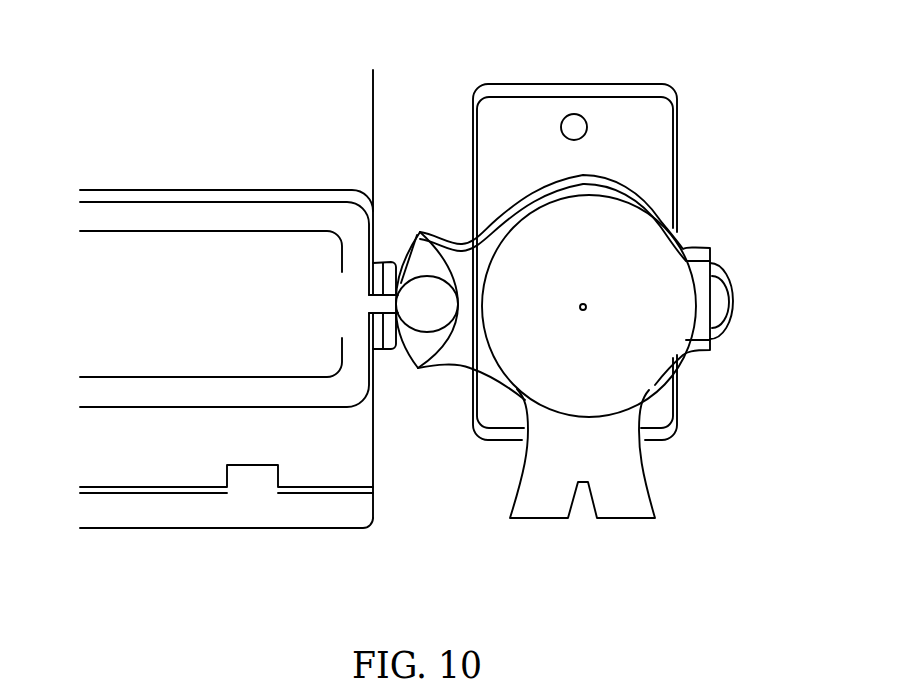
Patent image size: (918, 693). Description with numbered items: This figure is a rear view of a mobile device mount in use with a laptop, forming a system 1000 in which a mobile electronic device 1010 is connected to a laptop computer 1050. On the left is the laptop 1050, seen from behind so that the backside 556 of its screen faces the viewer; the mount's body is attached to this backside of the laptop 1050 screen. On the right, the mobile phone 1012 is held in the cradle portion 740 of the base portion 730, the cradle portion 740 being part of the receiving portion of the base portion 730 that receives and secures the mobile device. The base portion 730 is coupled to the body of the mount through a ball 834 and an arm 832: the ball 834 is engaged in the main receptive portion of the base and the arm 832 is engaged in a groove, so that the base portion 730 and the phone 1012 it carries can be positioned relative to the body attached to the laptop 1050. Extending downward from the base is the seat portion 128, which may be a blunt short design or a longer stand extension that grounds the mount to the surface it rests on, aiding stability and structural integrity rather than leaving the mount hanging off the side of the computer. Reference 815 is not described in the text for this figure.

The housing 815 is at (170, 186).
The backside of laptop screen 556 is at (368, 151).
The laptop computer 1050 is at (368, 450).
The arm 832 is at (369, 304).
The ball 834 is at (452, 304).
The system 1000 is at (723, 82).
The mobile electronic device 1010 is at (662, 138).
The mobile phone 1012 is at (542, 131).
The base portion 730 is at (723, 387).
The cradle portion 740 is at (553, 185).
The seat portion 128 is at (642, 493).